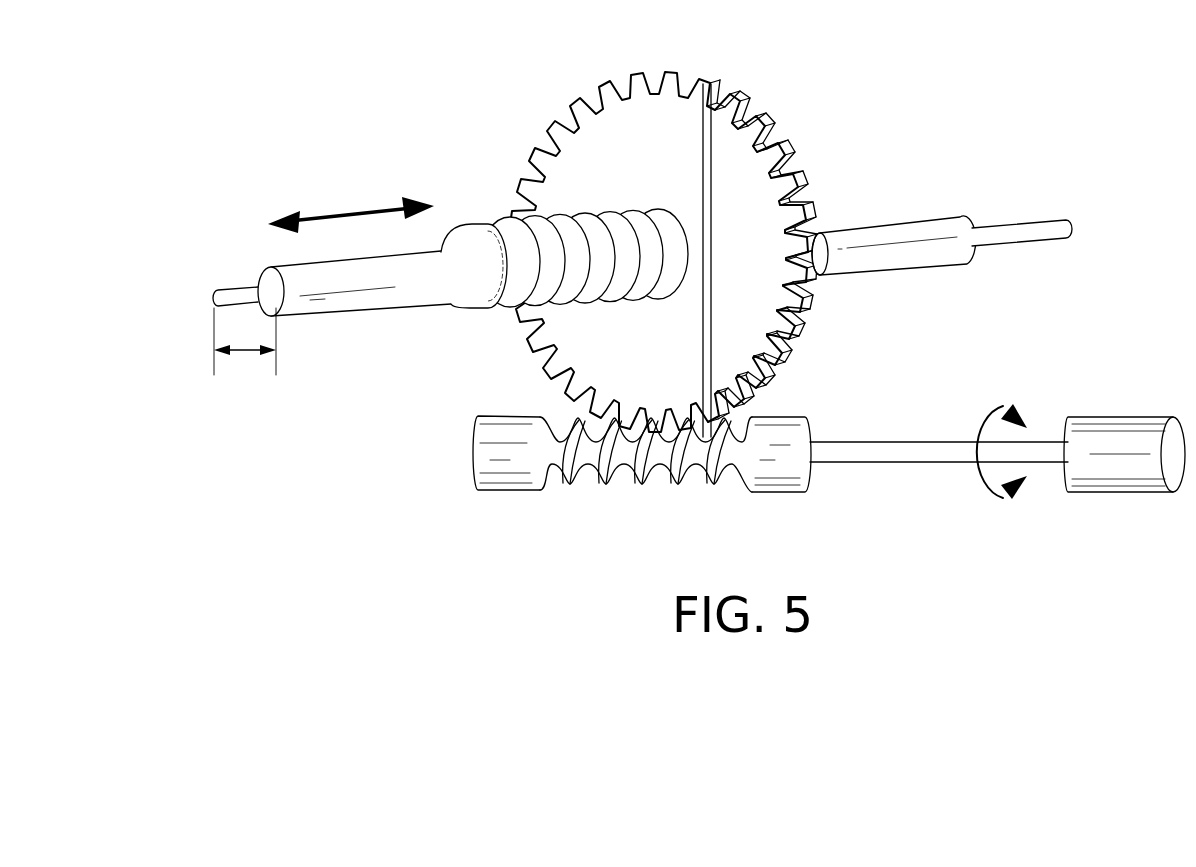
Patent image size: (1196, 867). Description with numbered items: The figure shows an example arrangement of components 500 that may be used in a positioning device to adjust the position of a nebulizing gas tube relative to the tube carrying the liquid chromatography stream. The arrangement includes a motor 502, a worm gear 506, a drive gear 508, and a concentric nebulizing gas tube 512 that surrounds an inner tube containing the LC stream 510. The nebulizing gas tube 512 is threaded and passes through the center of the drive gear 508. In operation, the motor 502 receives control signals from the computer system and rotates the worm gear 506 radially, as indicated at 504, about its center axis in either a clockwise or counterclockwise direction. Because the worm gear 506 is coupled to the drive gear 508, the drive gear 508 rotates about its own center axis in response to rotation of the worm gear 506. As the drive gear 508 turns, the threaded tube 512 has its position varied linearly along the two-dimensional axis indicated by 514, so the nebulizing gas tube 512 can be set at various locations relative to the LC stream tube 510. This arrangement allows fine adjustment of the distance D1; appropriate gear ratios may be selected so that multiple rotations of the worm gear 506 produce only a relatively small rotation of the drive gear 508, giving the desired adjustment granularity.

The example arrangement of components 500 is at (342, 47).
The motor 502 is at (1148, 417).
The radial rotation direction 504 is at (978, 418).
The worm gear 506 is at (640, 490).
The drive gear 508 is at (672, 80).
The inner tube containing the LC stream 510 is at (243, 287).
The concentric nebulizing gas tube 512 is at (340, 316).
The two-dimensional axis of linear positioning 514 is at (352, 215).
The distance D1 is at (240, 360).